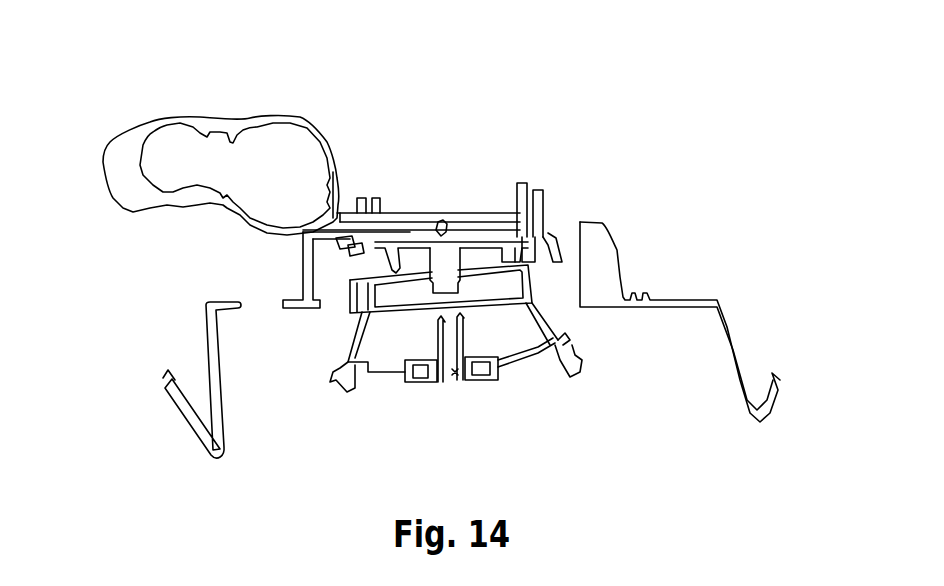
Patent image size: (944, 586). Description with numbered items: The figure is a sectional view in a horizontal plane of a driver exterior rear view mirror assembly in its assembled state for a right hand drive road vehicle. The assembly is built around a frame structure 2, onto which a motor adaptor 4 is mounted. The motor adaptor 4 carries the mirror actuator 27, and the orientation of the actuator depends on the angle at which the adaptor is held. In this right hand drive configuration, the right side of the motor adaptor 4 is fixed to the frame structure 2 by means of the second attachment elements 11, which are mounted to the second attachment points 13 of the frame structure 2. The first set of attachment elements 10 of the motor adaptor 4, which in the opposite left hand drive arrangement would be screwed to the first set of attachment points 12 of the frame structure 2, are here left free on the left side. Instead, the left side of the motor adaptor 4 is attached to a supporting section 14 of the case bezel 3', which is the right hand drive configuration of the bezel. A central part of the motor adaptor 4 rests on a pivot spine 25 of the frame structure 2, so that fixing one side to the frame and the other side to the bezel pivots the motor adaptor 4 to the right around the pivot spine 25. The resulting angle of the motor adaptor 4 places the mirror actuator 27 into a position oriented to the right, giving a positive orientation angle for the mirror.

The frame structure 2 is at (122, 185).
The first set of attachment points 12 is at (367, 210).
The motor adaptor 4 is at (488, 235).
The pivot spine 25 is at (442, 228).
The first set of attachment elements 10 is at (368, 246).
The second attachment points 13 is at (541, 196).
The second attachment elements 11 is at (532, 235).
The supporting section 14 is at (350, 240).
The mirror actuator 27 is at (516, 365).
The case bezel 3' is at (703, 322).